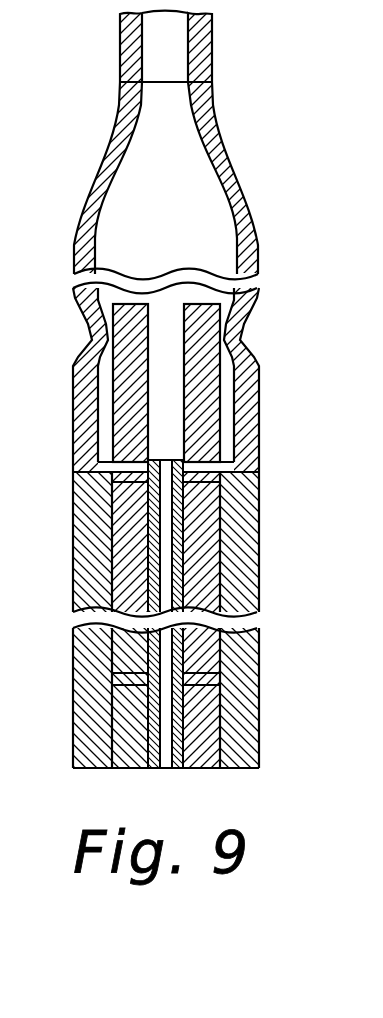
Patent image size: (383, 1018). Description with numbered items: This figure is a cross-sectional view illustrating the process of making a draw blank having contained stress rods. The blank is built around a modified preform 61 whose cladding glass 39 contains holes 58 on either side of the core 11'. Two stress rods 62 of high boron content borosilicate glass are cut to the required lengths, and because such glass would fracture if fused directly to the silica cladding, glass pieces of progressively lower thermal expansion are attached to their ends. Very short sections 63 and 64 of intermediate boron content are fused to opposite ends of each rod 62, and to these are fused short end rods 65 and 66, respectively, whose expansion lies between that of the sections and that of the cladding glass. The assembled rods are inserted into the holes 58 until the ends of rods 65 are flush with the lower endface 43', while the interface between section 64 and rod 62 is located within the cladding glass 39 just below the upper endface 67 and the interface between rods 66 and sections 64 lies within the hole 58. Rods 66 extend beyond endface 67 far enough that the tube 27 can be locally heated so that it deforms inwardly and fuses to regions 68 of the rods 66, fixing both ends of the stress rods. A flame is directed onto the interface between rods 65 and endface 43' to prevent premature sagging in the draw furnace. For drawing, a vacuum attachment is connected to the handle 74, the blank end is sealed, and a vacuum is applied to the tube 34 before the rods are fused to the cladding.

The handle 74 is at (204, 47).
The tube 34 is at (233, 173).
The tube 27 is at (262, 300).
The regions of rods 68 is at (104, 338).
The end rods 66 is at (120, 397).
The endface 67 is at (227, 458).
The core 11' is at (168, 439).
The section 64 is at (120, 475).
The stress rods 62 is at (113, 526).
The holes 58 is at (110, 564).
The cladding glass 39 is at (250, 600).
The modified preform 61 is at (262, 647).
The section 63 is at (130, 683).
The end rods 65 is at (130, 757).
The endface 43' is at (139, 784).